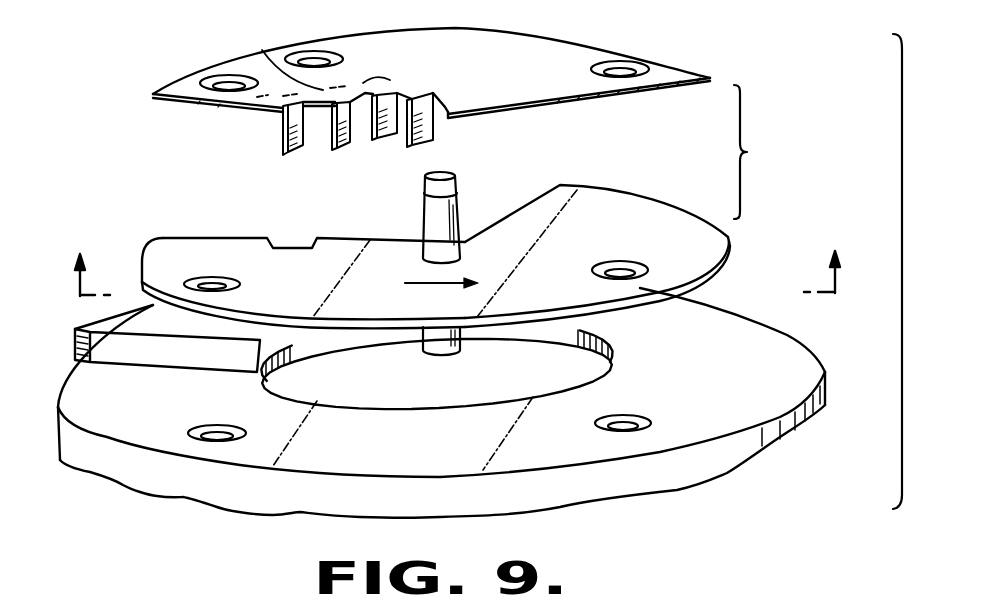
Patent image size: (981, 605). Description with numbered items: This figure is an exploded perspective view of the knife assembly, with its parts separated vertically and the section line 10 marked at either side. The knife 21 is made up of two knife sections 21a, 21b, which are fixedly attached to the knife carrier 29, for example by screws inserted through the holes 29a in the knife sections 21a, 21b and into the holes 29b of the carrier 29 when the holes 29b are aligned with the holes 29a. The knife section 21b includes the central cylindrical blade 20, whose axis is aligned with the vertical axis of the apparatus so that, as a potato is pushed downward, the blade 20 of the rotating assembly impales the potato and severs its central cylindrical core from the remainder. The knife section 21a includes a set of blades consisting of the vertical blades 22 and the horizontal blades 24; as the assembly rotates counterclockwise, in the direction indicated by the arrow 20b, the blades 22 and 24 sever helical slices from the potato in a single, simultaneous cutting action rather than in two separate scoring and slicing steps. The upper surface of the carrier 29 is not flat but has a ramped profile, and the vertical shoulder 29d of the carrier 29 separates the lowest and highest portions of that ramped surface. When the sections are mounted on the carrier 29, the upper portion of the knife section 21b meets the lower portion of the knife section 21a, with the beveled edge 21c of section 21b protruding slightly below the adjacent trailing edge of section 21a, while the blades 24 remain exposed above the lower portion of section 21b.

The section line indicator 10 is at (459, 259).
The central cylindrical blade 20 is at (458, 173).
The arrow 20b is at (445, 284).
The knife 21 is at (754, 152).
The knife section 21a is at (486, 34).
The knife section 21b is at (208, 243).
The beveled edge 21c is at (538, 198).
The vertical blades 22 is at (334, 148).
The horizontal blades 24 is at (277, 100).
The knife carrier 29 is at (803, 344).
The holes 29a is at (214, 80).
The holes 29b is at (190, 438).
The vertical shoulder 29d is at (161, 356).